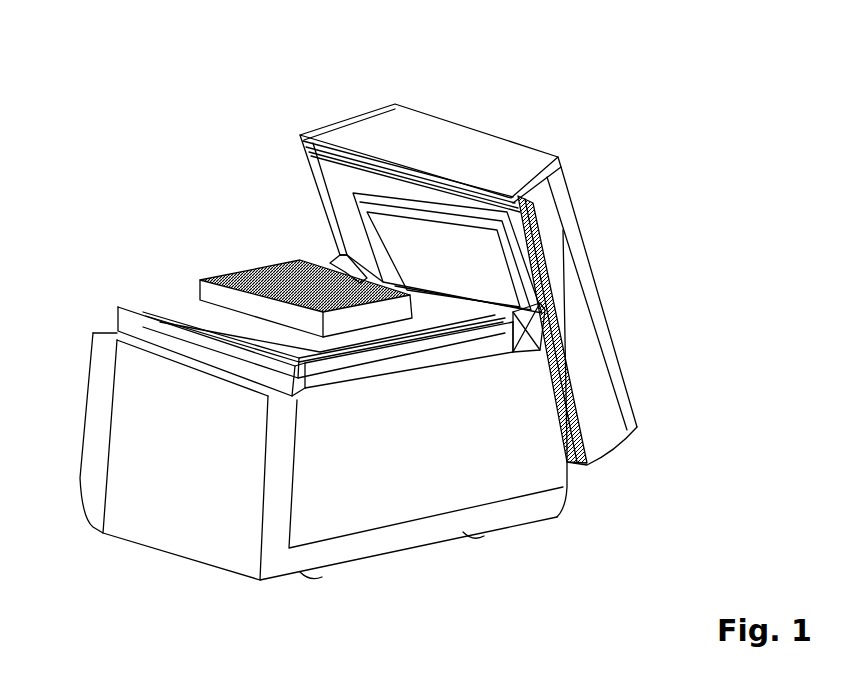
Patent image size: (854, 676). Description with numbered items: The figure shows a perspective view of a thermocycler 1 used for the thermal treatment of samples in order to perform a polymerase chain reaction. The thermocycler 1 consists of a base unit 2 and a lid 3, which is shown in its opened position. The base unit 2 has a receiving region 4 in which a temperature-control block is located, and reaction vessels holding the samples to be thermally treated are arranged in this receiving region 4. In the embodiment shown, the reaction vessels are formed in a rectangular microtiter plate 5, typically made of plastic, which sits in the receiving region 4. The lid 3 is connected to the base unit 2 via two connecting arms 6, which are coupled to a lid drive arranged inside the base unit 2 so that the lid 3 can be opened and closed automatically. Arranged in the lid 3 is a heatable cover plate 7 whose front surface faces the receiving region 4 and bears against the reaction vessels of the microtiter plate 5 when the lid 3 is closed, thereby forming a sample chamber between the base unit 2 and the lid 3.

The thermocycler 1 is at (383, 324).
The base unit 2 is at (490, 483).
The lid 3 is at (484, 266).
The receiving region 4 is at (167, 307).
The microtiter plate 5 is at (240, 273).
The connecting arms 6 is at (340, 273).
The cover plate 7 is at (433, 253).